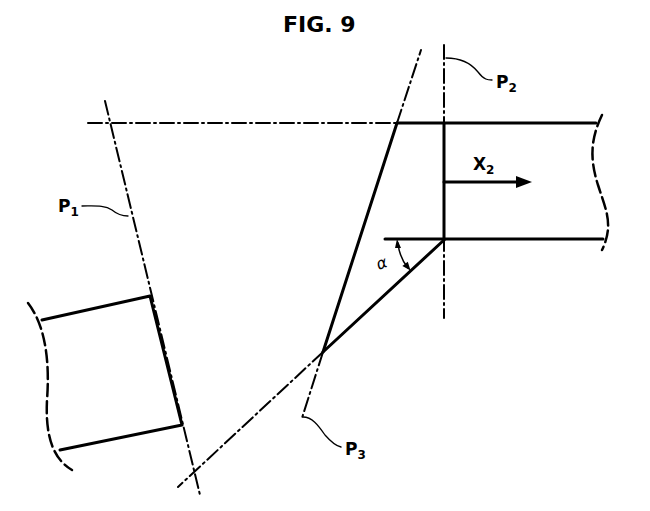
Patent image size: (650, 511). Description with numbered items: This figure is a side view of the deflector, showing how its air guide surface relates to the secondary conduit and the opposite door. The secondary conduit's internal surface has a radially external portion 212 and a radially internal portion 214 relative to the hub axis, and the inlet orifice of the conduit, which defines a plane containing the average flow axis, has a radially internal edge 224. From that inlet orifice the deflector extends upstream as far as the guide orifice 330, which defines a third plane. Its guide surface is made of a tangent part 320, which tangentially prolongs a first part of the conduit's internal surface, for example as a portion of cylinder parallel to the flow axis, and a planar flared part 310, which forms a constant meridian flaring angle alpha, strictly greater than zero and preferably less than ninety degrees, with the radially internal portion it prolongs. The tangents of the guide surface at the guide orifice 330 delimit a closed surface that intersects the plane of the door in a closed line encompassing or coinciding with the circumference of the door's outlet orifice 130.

The outlet orifice 130 is at (168, 355).
The radially external surface portion 212 is at (541, 121).
The radially internal surface portion 214 is at (535, 242).
The radially internal edge 224 is at (446, 243).
The flared part 310 is at (398, 197).
The tangent part 320 is at (422, 122).
The guide orifice 330 is at (373, 223).